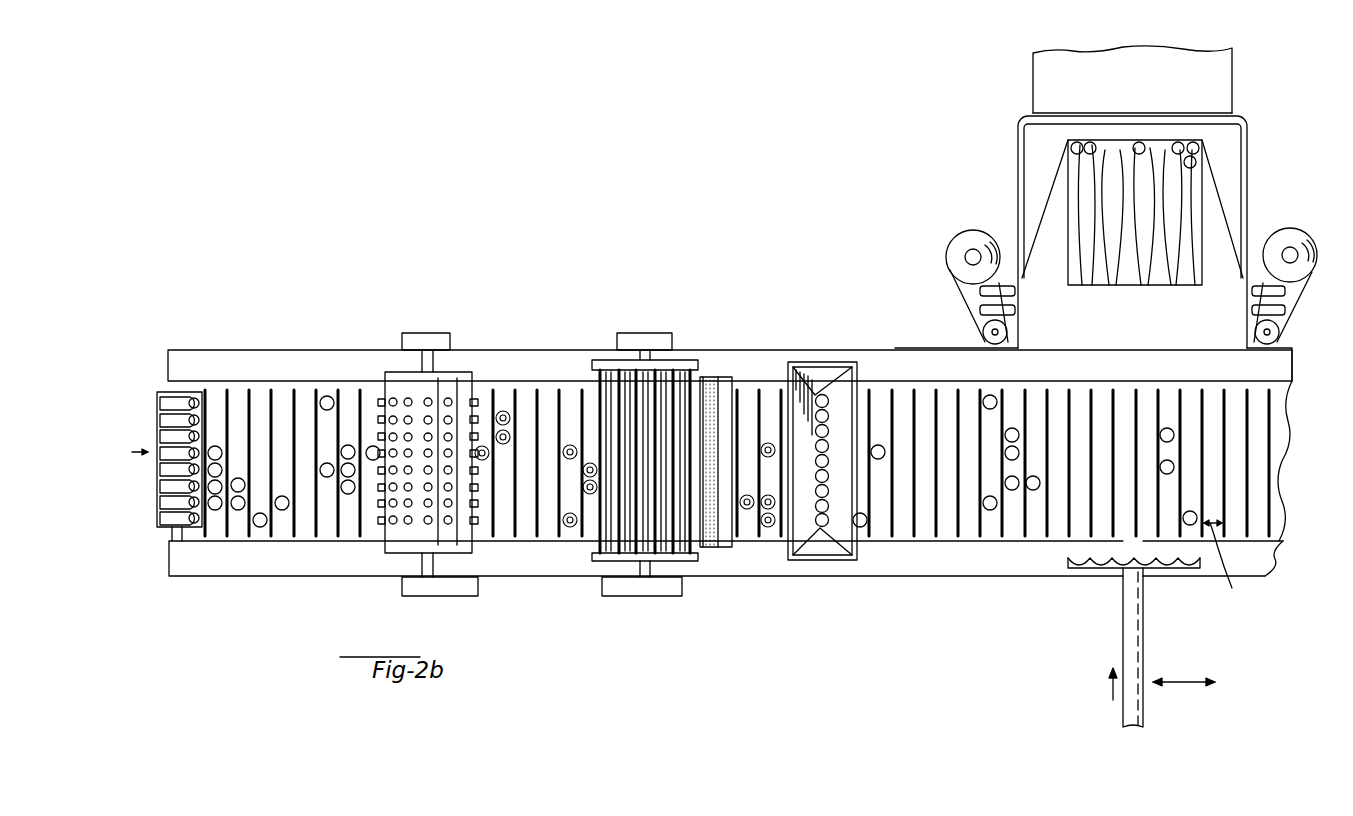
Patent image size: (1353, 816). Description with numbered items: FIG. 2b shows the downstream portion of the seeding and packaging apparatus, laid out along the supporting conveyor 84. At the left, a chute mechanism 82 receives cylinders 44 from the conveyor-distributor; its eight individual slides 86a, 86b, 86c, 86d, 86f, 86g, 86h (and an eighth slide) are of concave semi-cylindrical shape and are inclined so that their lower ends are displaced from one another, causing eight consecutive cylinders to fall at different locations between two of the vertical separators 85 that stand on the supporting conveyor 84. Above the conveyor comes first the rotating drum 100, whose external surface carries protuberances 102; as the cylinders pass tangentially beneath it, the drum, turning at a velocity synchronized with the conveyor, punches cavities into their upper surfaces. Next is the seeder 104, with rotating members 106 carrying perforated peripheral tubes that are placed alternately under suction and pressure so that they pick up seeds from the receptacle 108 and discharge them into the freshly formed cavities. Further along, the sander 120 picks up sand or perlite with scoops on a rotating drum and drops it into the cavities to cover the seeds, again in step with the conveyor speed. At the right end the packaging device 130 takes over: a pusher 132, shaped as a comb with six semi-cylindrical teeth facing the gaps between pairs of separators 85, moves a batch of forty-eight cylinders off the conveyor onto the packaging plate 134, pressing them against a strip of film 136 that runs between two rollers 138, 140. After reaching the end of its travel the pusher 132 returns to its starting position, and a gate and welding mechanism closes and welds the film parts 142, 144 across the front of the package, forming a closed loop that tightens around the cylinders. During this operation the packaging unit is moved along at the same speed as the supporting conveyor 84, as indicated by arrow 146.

The hopper 82 is at (197, 467).
The supporting conveyor 84 is at (300, 351).
The vertical separators 85 is at (296, 527).
The individual slide 86a is at (163, 528).
The individual slide 86b is at (180, 510).
The individual slide 86c is at (185, 490).
The individual slide 86d is at (180, 460).
The individual slide 86f is at (178, 438).
The individual slide 86g is at (194, 422).
The individual slide 86h is at (175, 395).
The article 44 is at (262, 528).
The rotating drum 100 is at (456, 443).
The protuberances 102 is at (431, 402).
The seeder 104 is at (646, 460).
The brush rollers 106 is at (597, 392).
The receptacle 108 is at (715, 386).
The sander 120 is at (830, 362).
The packaging device 130 is at (1114, 213).
The pusher 132 is at (1122, 634).
The packaging plate 134 is at (1085, 190).
The strip of film 136 is at (1212, 184).
The roller 138 is at (1283, 238).
The roller 140 is at (960, 245).
The film part 142 is at (1293, 297).
The film part 144 is at (972, 319).
The arrow 146 is at (1185, 682).